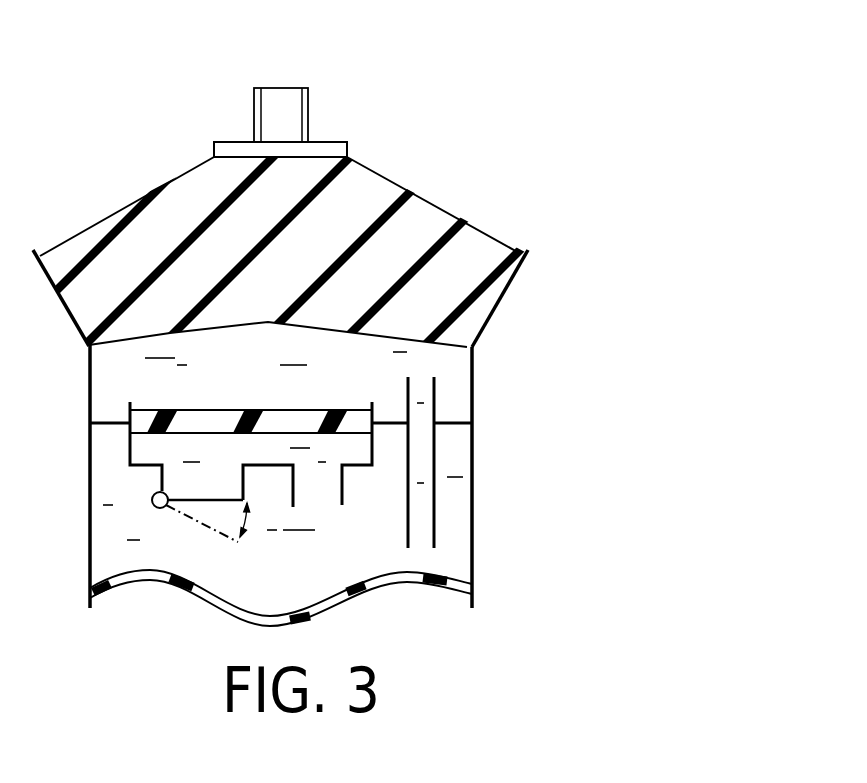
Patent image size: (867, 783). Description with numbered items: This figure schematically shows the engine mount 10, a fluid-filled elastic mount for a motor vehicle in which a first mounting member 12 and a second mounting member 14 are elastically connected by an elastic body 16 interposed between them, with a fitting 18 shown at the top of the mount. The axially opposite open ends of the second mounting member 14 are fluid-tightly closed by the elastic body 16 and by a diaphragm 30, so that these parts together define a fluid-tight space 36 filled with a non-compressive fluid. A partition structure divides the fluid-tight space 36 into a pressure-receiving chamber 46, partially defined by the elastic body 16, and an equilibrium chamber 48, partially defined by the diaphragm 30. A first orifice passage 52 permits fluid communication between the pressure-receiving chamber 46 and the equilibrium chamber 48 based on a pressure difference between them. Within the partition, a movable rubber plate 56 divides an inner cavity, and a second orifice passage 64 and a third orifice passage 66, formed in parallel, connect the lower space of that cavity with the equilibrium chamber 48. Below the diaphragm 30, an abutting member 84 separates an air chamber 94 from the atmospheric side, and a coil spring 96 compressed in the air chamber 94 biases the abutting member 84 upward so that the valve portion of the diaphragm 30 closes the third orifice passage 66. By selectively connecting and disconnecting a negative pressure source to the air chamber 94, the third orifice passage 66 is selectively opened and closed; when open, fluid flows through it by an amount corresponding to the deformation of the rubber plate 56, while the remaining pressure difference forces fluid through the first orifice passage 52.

The engine mount 10 is at (435, 110).
The first mounting member 12 is at (340, 128).
The second mounting member 14 is at (493, 368).
The elastic body 16 is at (148, 247).
The fitting / boss 18 is at (283, 100).
The diaphragm 30 is at (142, 575).
The fluid-tight space 36 is at (582, 415).
The pressure-receiving chamber 46 is at (455, 393).
The equilibrium chamber 48 is at (450, 452).
The first orifice passage 52 is at (423, 515).
The rubber plate 56 is at (193, 420).
The second orifice passage 64 is at (328, 487).
The third orifice passage 66 is at (177, 482).
The abutting member 84 is at (527, 185).
The air chamber 94 is at (498, 295).
The coil spring 96 is at (467, 278).